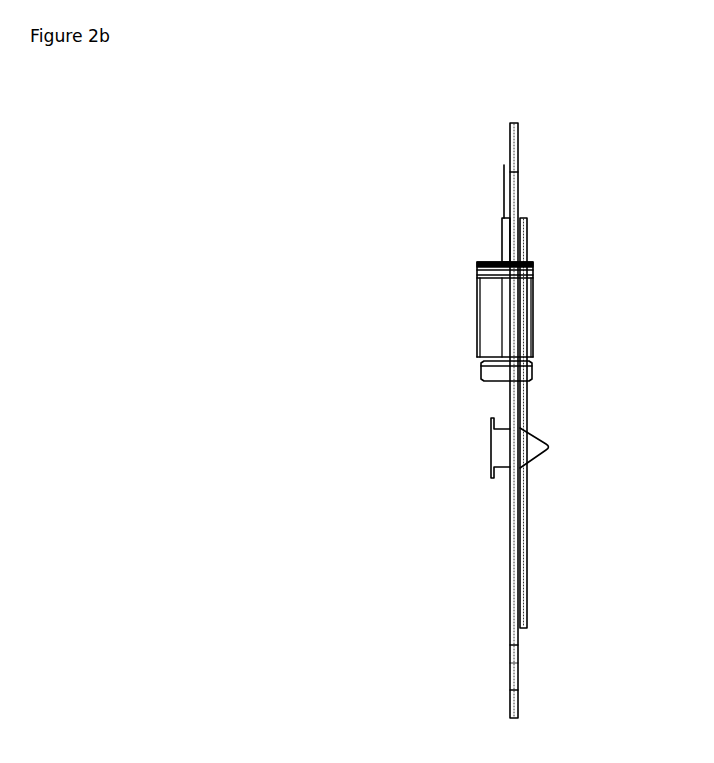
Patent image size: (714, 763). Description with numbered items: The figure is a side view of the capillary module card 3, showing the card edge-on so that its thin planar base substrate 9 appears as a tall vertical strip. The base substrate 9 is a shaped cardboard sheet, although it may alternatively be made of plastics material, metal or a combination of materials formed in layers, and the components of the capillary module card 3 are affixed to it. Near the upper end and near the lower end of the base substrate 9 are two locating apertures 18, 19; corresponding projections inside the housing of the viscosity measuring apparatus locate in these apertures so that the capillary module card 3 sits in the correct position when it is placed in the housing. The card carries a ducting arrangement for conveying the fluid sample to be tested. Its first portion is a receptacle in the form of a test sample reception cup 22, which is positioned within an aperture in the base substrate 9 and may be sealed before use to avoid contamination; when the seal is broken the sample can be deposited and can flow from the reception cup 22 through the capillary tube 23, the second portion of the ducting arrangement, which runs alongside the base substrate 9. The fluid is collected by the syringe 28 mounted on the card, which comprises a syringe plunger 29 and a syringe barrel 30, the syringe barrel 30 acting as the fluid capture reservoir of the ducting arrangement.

The capillary module card 3 is at (488, 108).
The base substrate 9 is at (513, 123).
The locating aperture 18 is at (513, 188).
The locating aperture 19 is at (513, 663).
The test sample reception cup 22 is at (528, 447).
The capillary tube 23 is at (525, 247).
The syringe 28 is at (495, 260).
The syringe plunger 29 is at (492, 385).
The syringe barrel 30 is at (477, 330).